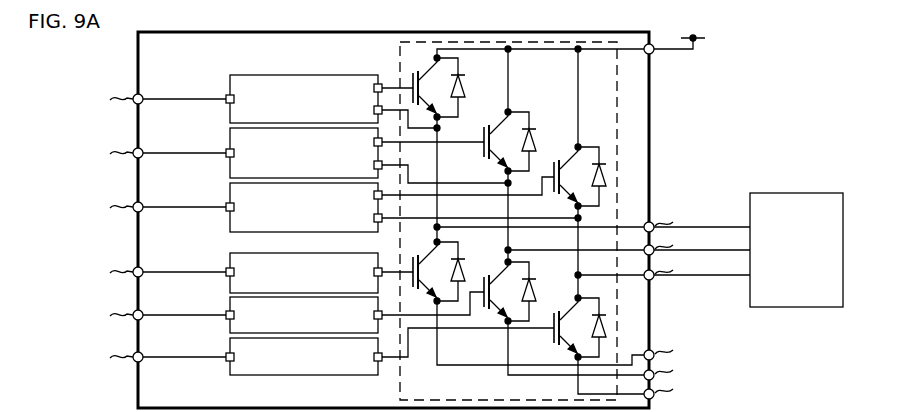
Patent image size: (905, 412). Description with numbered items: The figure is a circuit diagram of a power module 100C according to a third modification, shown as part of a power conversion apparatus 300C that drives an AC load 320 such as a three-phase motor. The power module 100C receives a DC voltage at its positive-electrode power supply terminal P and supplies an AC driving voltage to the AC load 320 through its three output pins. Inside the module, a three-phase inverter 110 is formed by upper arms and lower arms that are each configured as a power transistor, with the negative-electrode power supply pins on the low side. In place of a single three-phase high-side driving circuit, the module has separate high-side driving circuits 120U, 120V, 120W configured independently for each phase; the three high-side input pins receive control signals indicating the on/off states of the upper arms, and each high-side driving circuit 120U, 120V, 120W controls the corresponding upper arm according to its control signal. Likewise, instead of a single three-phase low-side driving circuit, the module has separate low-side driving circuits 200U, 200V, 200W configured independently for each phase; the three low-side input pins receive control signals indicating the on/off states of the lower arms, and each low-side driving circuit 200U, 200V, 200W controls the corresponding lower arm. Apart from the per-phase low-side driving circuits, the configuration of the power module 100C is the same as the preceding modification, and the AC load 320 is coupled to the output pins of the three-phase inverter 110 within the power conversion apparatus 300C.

The power conversion apparatus 300C is at (843, 31).
The power module 100C is at (310, 30).
The three-phase inverter 110 is at (400, 385).
The U-phase high-side driving circuit 120U is at (230, 112).
The V-phase high-side driving circuit 120V is at (230, 167).
The W-phase high-side driving circuit 120W is at (230, 221).
The U-phase low-side driving circuit 200U is at (230, 283).
The V-phase low-side driving circuit 200V is at (230, 325).
The W-phase low-side driving circuit 200W is at (230, 366).
The AC load 320 is at (788, 193).
The power supply terminal P is at (654, 54).